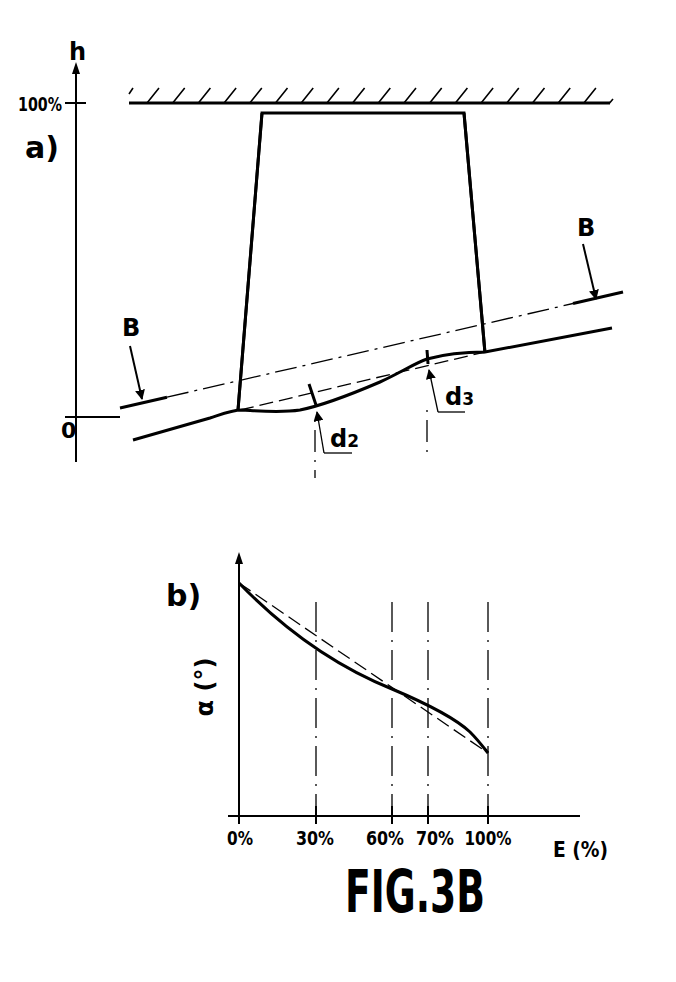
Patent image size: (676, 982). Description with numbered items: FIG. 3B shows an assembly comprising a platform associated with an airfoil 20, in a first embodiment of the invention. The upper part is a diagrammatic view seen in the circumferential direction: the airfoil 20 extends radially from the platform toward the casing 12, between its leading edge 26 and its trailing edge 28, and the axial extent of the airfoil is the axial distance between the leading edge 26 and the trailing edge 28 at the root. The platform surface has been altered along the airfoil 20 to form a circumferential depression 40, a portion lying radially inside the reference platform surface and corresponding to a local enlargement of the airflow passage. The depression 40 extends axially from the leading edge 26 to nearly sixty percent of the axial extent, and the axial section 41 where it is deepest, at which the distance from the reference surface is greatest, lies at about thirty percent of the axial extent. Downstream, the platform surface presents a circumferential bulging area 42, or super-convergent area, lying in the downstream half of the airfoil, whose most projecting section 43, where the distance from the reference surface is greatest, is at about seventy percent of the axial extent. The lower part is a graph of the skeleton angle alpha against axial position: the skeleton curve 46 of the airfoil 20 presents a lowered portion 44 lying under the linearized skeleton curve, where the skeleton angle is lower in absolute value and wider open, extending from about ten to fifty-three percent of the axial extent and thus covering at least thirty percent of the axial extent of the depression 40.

The casing 12 is at (503, 106).
The airfoil 20 is at (368, 226).
The leading edge 26 is at (256, 206).
The trailing edge 28 is at (473, 192).
The circumferential depression 40 is at (357, 397).
The axial section 41 is at (319, 397).
The circumferential bulging area 42 is at (427, 350).
The most projecting section 43 is at (423, 351).
The lowered portion 44 is at (283, 631).
The skeleton curve 46 is at (348, 670).